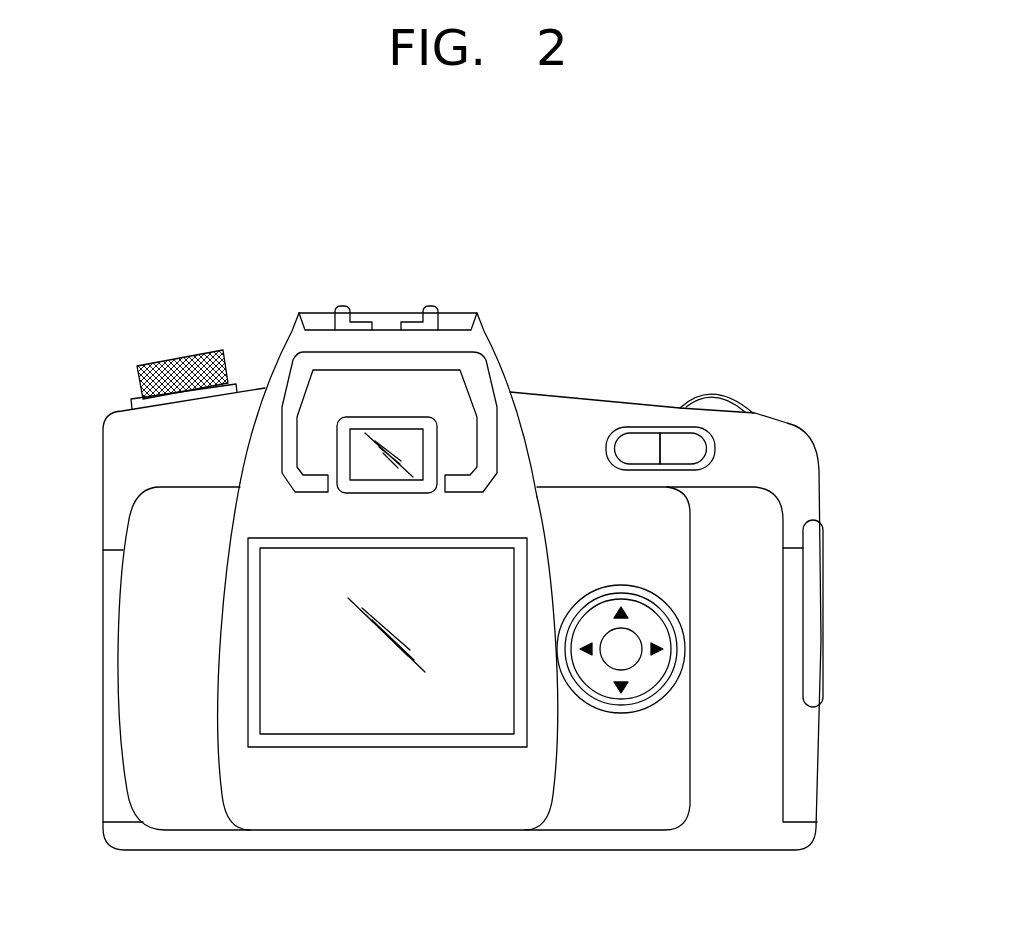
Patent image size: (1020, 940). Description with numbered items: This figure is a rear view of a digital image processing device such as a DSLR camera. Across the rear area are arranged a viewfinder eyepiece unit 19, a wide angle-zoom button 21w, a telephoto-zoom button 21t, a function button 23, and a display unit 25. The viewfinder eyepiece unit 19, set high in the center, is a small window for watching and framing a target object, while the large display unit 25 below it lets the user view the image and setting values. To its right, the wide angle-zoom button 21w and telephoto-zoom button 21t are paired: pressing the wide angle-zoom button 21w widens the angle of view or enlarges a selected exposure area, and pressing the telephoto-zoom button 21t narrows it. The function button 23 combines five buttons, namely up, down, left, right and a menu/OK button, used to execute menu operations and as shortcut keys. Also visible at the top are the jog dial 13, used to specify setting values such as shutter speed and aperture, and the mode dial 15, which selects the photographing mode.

The jog dial 13 is at (717, 393).
The mode dial 15 is at (180, 357).
The viewfinder eyepiece unit 19 is at (410, 444).
The wide angle-zoom button 21w is at (637, 437).
The telephoto-zoom button 21t is at (677, 437).
The function button 23 is at (687, 645).
The display unit 25 is at (250, 638).